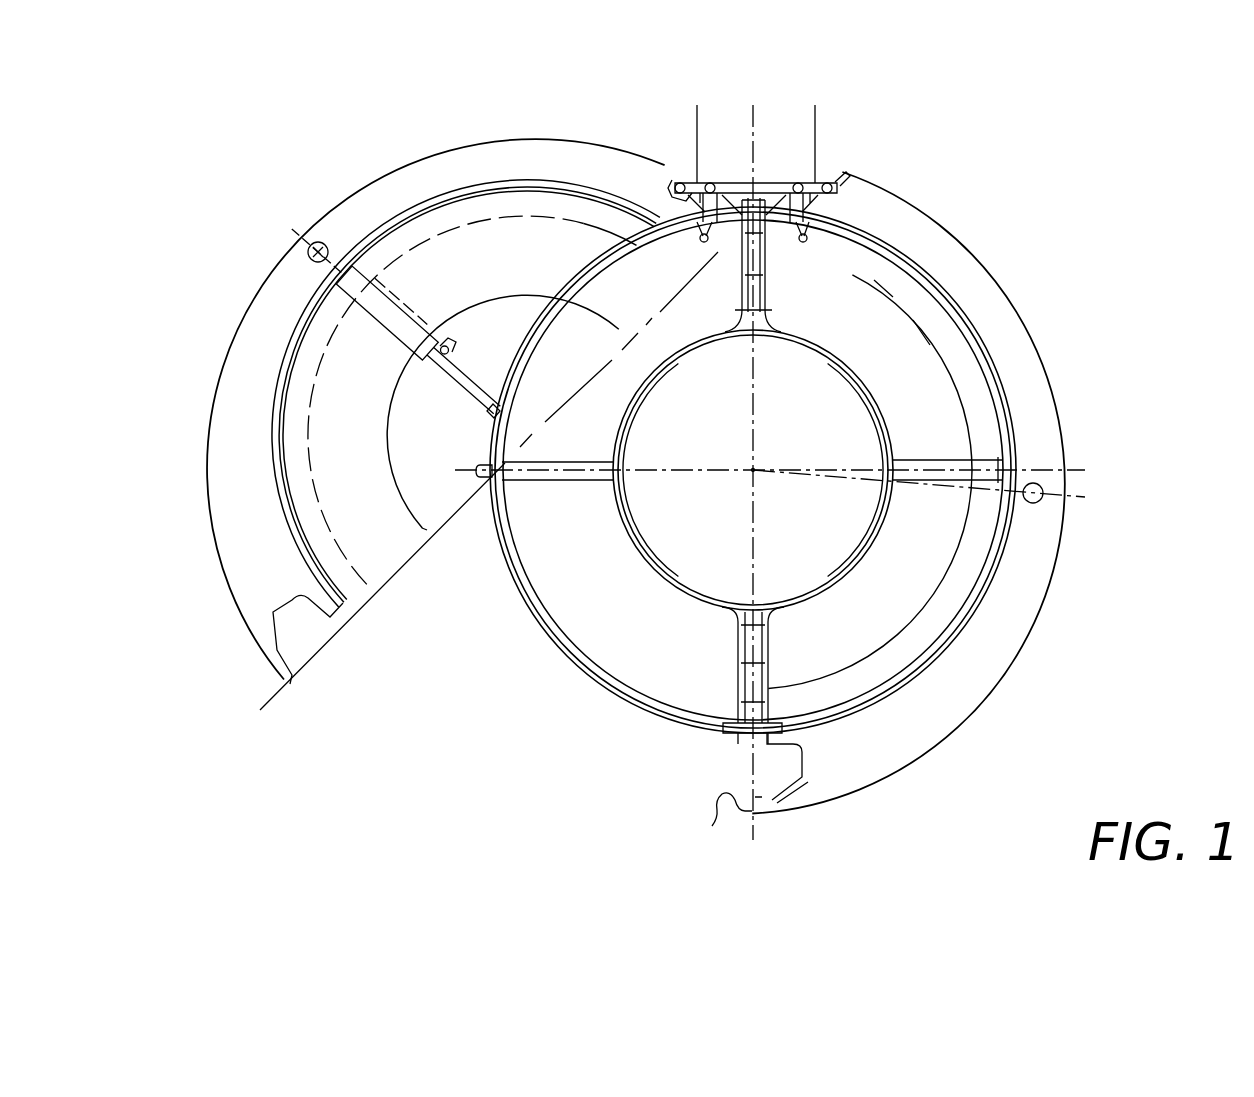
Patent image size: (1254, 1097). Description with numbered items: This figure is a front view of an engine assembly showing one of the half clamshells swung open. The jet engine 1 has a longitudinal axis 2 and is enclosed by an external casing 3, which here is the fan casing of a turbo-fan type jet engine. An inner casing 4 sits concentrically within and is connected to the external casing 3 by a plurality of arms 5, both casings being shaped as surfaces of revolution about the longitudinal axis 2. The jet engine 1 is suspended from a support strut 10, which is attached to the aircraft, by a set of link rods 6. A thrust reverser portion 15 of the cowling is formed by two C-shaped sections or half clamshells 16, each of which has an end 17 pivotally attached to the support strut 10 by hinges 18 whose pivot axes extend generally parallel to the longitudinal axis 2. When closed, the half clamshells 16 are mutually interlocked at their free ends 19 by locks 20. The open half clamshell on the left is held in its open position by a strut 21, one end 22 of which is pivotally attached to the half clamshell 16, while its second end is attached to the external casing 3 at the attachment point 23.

The jet engine 1 is at (586, 755).
The longitudinal axis 2 is at (758, 474).
The external casing 3 is at (565, 663).
The inner casing 4 is at (655, 577).
The arms 5 is at (770, 306).
The link rods 6 is at (710, 220).
The support strut 10 is at (818, 128).
The thrust reverser portion 15 is at (372, 170).
The half clamshells 16 is at (240, 318).
The end 17 is at (625, 130).
The hinges 18 is at (680, 183).
The free ends 19 is at (275, 683).
The locks 20 is at (716, 808).
The strut 21 is at (395, 333).
The end 22 is at (375, 262).
The attachment point 23 is at (493, 410).